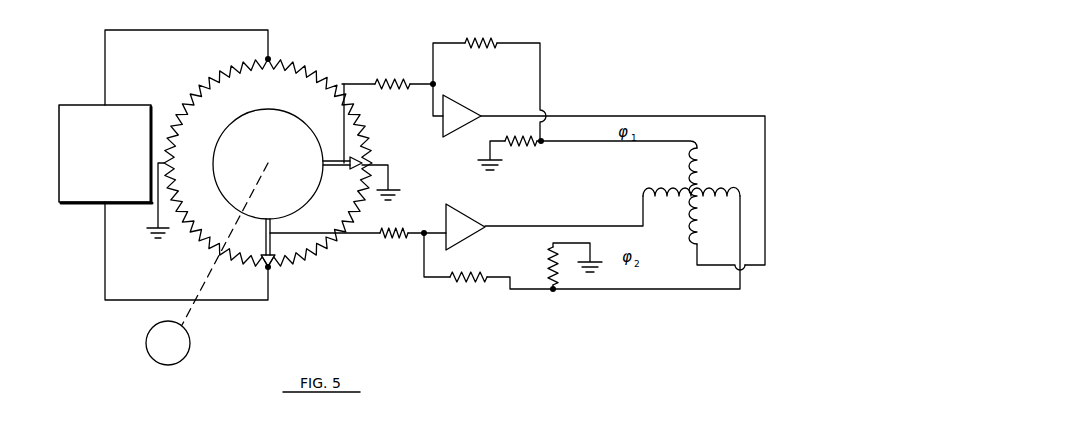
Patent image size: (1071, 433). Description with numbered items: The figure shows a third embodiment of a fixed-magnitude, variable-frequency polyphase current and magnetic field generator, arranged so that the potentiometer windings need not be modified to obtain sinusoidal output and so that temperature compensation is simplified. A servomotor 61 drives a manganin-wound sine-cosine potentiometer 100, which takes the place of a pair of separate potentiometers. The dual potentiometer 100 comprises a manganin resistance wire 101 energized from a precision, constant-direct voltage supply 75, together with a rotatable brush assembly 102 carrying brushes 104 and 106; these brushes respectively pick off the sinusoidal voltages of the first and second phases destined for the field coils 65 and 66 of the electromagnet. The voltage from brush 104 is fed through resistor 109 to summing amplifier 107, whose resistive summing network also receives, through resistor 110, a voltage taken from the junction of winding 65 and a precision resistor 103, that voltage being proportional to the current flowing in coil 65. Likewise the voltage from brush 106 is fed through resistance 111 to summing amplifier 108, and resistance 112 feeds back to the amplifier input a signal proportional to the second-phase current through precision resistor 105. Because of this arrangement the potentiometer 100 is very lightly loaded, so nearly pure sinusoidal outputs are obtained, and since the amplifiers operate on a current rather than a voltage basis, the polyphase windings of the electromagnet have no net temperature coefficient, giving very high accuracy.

The servomotor 61 is at (169, 354).
The field coil 65 is at (702, 165).
The field coil 66 is at (676, 203).
The constant-direct voltage supply 75 is at (75, 194).
The sine-cosine potentiometer 100 is at (268, 147).
The manganin resistance wire 101 is at (216, 78).
The rotatable brush assembly 102 is at (228, 136).
The precision resistor 103 is at (528, 138).
The brush 104 is at (329, 160).
The precision resistor 105 is at (548, 268).
The brush 106 is at (284, 232).
The summing amplifier 107 is at (457, 99).
The summing amplifier 108 is at (468, 216).
The resistor 109 is at (394, 80).
The resistor 110 is at (486, 39).
The resistance 111 is at (396, 229).
The resistance 112 is at (456, 283).